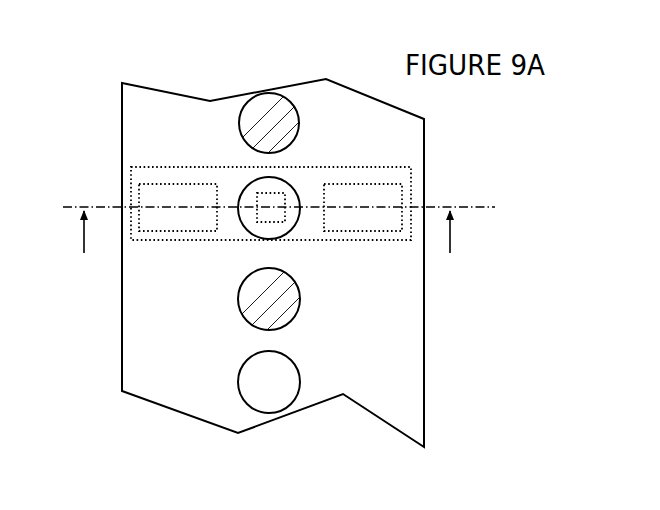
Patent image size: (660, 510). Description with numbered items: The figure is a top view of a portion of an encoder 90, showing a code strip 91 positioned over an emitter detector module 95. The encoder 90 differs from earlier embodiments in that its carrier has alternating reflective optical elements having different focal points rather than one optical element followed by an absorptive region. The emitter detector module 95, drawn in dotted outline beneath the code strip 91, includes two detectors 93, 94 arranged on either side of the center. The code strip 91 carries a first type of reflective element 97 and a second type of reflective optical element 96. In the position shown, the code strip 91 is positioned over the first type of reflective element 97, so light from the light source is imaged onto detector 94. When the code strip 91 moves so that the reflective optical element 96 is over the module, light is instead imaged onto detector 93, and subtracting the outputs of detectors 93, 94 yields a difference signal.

The encoder 90 is at (116, 98).
The code strip 91 is at (418, 337).
The detector 93 is at (180, 219).
The detector 94 is at (363, 220).
The emitter detector module 95 is at (365, 168).
The reflective optical element 96 is at (288, 305).
The reflective element 97 is at (253, 188).